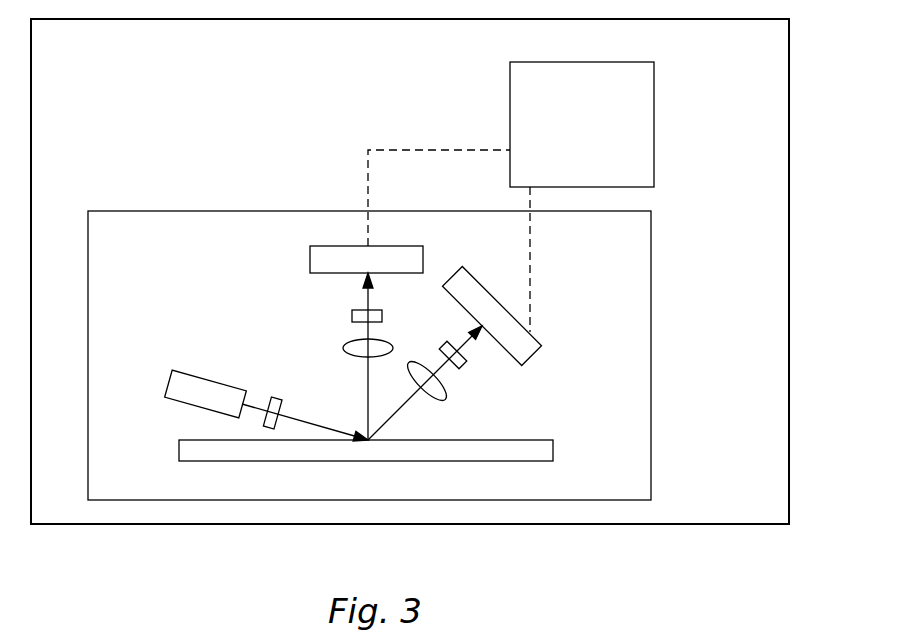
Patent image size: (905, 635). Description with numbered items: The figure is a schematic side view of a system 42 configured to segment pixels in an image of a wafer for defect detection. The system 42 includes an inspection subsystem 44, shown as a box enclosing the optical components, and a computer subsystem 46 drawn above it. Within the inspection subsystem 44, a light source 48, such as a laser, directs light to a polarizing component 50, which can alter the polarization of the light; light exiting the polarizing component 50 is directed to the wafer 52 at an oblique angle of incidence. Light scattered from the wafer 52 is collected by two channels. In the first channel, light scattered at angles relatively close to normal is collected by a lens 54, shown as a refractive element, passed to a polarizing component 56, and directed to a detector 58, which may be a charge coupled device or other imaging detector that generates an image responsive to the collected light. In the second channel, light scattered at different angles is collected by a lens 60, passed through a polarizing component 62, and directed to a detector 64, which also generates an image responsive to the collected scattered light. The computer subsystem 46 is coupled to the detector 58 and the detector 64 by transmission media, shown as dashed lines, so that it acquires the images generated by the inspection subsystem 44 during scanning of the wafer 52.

The system 42 is at (789, 102).
The inspection subsystem 44 is at (651, 327).
The computer subsystem 46 is at (570, 166).
The light source 48 is at (198, 373).
The polarizing component 50 is at (275, 396).
The wafer 52 is at (192, 439).
The lens 54 is at (343, 341).
The polarizing component 56 is at (352, 312).
The detector 58 is at (310, 260).
The lens 60 is at (445, 398).
The polarizing component 62 is at (462, 368).
The detector 64 is at (532, 353).